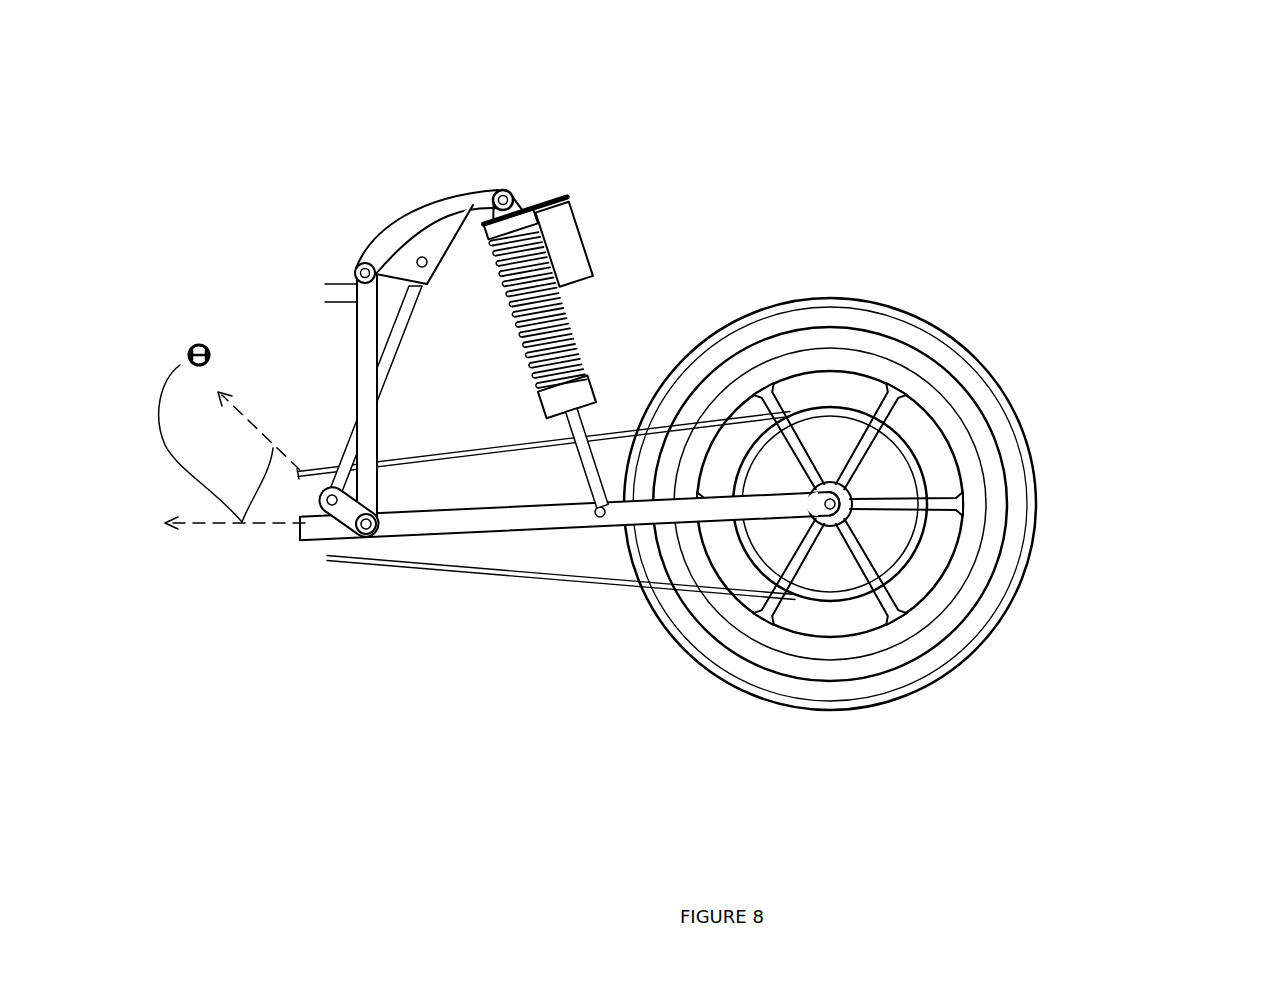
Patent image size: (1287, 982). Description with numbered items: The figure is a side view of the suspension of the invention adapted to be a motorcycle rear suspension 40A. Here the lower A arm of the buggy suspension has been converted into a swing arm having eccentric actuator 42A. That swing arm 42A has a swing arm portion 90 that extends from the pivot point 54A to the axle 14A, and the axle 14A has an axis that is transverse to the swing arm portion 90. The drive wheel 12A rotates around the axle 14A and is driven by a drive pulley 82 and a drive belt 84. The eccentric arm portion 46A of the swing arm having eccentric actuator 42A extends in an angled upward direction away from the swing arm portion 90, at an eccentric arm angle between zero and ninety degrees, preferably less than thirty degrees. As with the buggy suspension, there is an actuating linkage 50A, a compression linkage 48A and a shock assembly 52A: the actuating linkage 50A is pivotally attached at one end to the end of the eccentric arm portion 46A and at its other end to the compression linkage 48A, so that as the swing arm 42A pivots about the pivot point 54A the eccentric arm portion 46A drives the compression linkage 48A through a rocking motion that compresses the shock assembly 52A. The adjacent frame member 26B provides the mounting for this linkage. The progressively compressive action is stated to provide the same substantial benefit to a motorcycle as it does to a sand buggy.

The drive wheel 12A is at (1037, 515).
The axle 14A is at (845, 522).
The frame member 26B is at (357, 385).
The motorcycle rear suspension 40A is at (1136, 206).
The swing arm having eccentric actuator 42A is at (430, 658).
The eccentric arm portion 46A is at (330, 515).
The compression linkage 48A is at (396, 214).
The actuating linkage 50A is at (404, 328).
The shock assembly 52A is at (590, 215).
The pivot point 54A is at (367, 540).
The drive pulley 82 is at (905, 440).
The drive belt 84 is at (580, 578).
The swing arm portion 90 is at (777, 386).